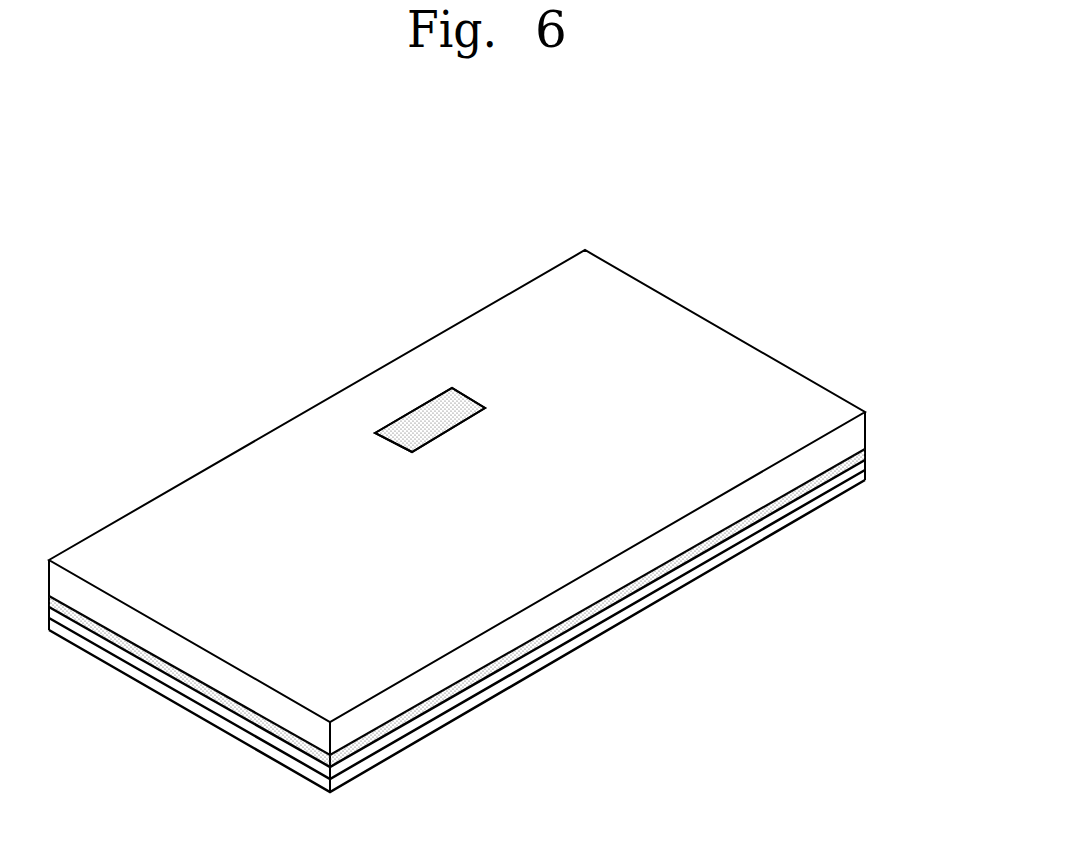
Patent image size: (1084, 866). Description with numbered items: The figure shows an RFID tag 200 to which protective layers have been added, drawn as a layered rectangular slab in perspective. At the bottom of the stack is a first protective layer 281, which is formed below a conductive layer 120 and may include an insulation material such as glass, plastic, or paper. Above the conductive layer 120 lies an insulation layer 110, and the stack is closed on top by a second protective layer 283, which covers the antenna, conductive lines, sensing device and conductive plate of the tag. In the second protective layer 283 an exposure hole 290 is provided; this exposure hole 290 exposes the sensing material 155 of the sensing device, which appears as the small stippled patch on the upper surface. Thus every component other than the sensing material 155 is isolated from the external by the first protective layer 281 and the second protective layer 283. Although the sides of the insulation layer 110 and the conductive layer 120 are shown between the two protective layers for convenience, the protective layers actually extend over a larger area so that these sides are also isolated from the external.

The RFID tag 200 is at (800, 206).
The second protective layer 283 is at (866, 424).
The insulation layer 110 is at (866, 452).
The conductive layer 120 is at (866, 464).
The first protective layer 281 is at (866, 477).
The sensing material 155 is at (443, 407).
The exposure hole 290 is at (388, 442).